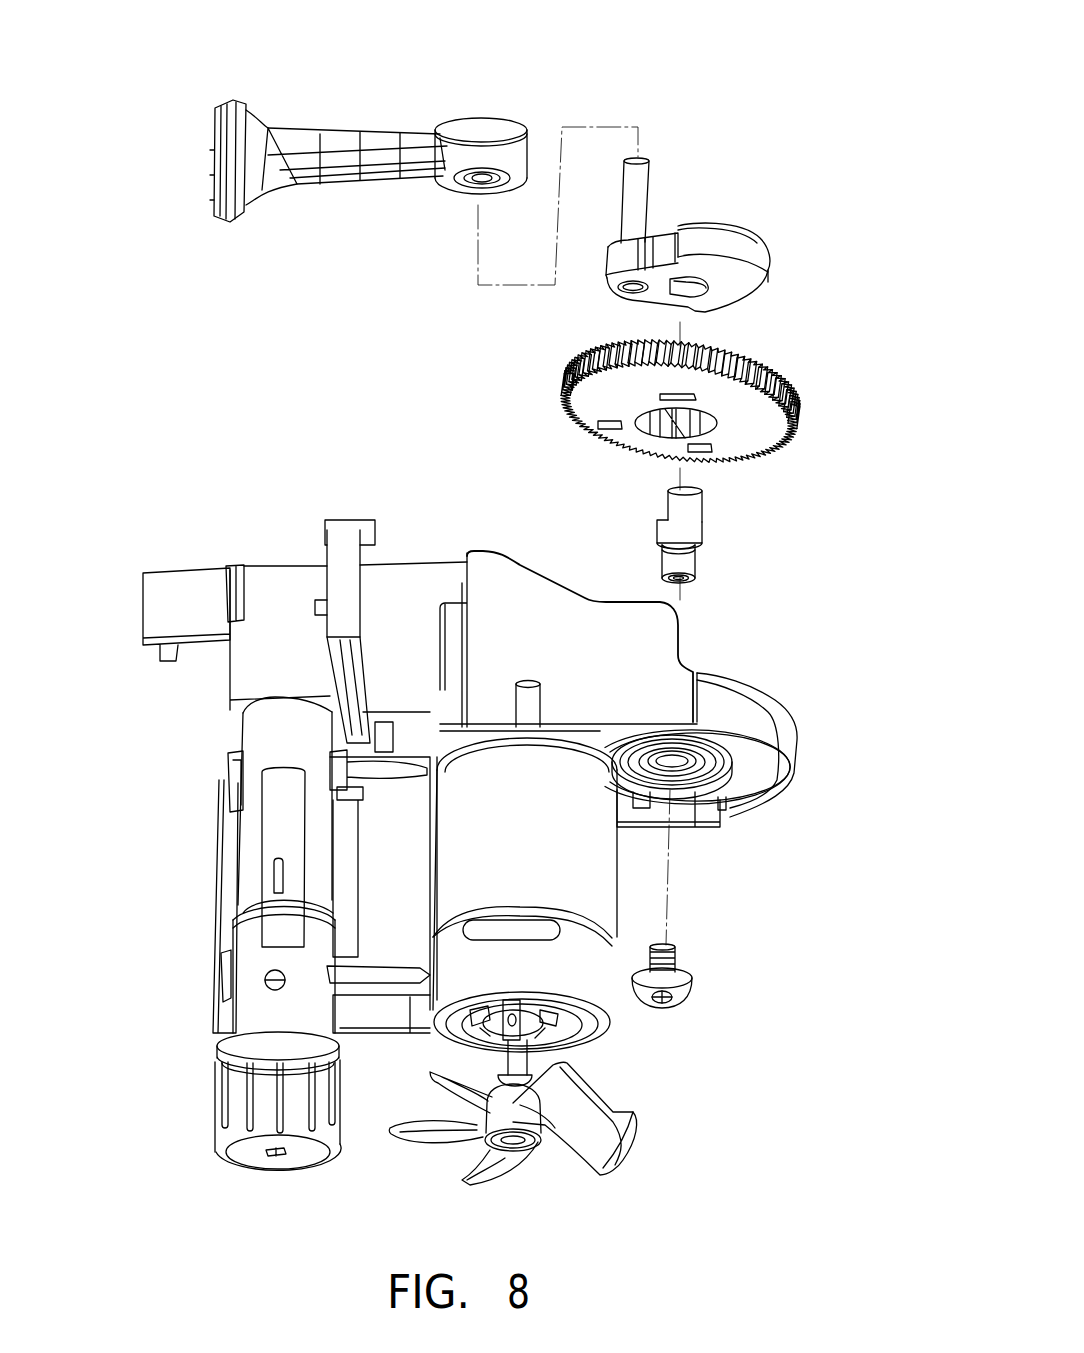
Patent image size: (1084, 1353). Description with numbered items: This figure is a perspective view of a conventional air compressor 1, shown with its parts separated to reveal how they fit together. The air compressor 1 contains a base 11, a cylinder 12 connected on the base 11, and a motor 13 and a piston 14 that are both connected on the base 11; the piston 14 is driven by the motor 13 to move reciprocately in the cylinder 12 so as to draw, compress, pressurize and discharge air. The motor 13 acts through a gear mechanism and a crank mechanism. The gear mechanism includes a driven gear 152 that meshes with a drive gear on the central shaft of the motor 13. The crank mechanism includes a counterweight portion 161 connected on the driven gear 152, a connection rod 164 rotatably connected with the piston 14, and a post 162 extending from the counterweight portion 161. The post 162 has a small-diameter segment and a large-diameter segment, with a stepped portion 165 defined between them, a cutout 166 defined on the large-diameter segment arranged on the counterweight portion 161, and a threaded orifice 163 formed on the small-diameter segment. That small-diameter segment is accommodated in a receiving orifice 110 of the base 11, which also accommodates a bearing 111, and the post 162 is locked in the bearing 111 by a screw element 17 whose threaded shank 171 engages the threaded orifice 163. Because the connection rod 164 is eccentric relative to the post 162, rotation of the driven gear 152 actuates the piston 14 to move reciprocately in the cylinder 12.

The air compressor 1 is at (143, 1130).
The base 11 is at (780, 727).
The receiving orifice 110 is at (737, 795).
The bearing 111 is at (715, 777).
The cylinder 12 is at (390, 593).
The motor 13 is at (593, 985).
The piston 14 is at (341, 140).
The driven gear 152 is at (753, 418).
The counterweight portion 161 is at (745, 287).
The post 162 is at (698, 527).
The threaded orifice 163 is at (694, 580).
The connection rod 164 is at (637, 182).
The stepped portion 165 is at (655, 548).
The cutout 166 is at (655, 517).
The screw element 17 is at (672, 992).
The thread 171 is at (676, 963).